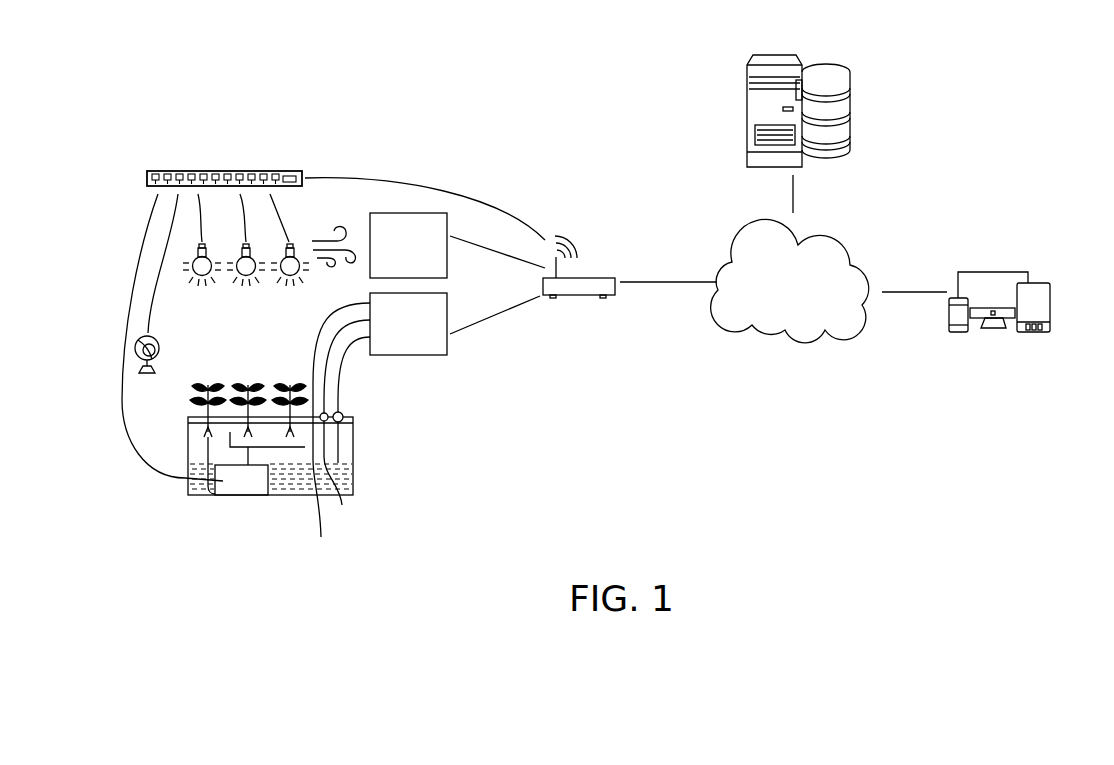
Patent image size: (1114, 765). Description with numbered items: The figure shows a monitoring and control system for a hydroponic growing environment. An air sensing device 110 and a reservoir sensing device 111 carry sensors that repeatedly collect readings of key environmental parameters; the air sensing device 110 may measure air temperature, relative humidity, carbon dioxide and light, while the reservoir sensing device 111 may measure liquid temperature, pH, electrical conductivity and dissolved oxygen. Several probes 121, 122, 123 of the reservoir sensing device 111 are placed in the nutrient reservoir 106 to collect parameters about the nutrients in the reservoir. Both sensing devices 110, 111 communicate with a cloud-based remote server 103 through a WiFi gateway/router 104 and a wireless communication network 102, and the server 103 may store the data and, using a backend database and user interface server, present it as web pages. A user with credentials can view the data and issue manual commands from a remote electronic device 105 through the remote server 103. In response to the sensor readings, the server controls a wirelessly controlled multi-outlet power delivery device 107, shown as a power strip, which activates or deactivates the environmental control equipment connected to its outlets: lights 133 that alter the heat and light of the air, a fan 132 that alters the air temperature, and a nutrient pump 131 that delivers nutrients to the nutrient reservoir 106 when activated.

The wireless communication network 102 is at (782, 335).
The remote server 103 is at (843, 118).
The WiFi gateway/router 104 is at (603, 298).
The remote electronic device 105 is at (1053, 303).
The nutrient reservoir 106 is at (300, 480).
The wirelessly controlled multi-outlet power delivery device 107 is at (278, 170).
The air sensing device 110 is at (443, 213).
The reservoir sensing device 111 is at (441, 355).
The probe 121 is at (324, 473).
The probe 122 is at (340, 467).
The probe 123 is at (341, 440).
The nutrient pump 131 is at (223, 496).
The fan 132 is at (160, 348).
The lights 133 is at (291, 242).